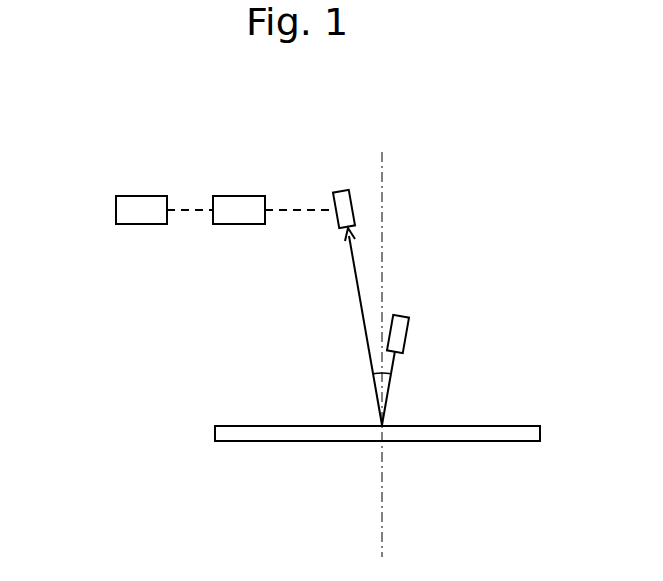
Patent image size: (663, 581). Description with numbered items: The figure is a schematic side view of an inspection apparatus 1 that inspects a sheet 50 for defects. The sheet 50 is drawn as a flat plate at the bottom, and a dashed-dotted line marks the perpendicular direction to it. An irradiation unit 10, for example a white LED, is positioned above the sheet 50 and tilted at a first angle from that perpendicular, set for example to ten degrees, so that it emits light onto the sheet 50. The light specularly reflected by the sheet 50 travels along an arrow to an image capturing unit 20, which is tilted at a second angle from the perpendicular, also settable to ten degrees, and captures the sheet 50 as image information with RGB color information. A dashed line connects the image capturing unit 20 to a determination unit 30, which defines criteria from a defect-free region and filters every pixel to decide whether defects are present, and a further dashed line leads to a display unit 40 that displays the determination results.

The inspection apparatus 1 is at (76, 109).
The irradiation unit 10 is at (412, 300).
The image capturing unit 20 is at (340, 190).
The determination unit 30 is at (244, 200).
The display unit 40 is at (144, 200).
The sheet 50 is at (237, 435).